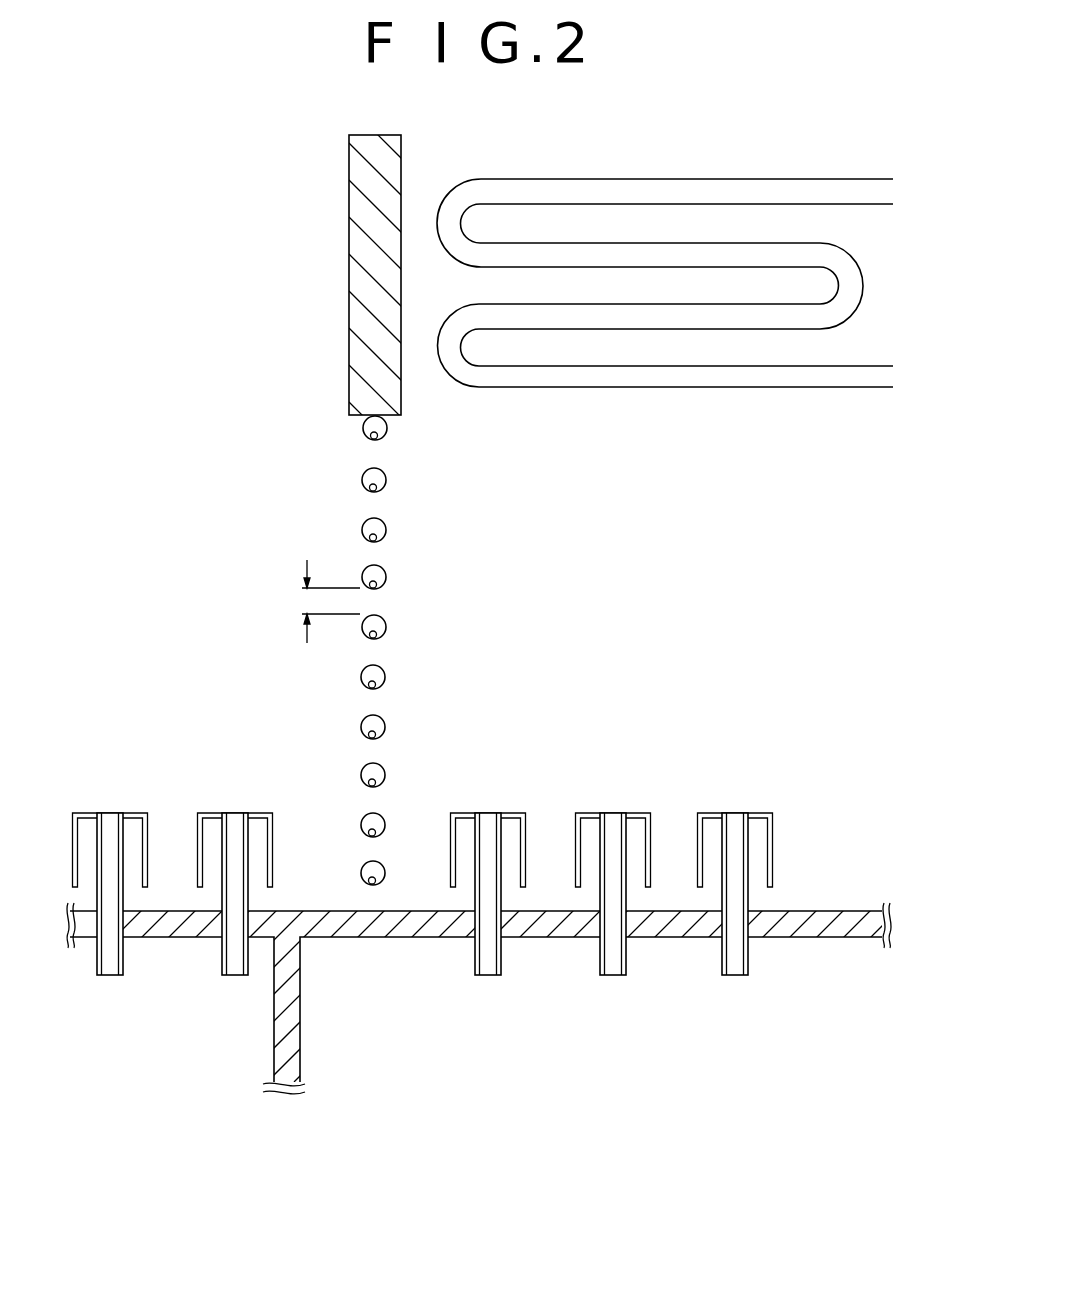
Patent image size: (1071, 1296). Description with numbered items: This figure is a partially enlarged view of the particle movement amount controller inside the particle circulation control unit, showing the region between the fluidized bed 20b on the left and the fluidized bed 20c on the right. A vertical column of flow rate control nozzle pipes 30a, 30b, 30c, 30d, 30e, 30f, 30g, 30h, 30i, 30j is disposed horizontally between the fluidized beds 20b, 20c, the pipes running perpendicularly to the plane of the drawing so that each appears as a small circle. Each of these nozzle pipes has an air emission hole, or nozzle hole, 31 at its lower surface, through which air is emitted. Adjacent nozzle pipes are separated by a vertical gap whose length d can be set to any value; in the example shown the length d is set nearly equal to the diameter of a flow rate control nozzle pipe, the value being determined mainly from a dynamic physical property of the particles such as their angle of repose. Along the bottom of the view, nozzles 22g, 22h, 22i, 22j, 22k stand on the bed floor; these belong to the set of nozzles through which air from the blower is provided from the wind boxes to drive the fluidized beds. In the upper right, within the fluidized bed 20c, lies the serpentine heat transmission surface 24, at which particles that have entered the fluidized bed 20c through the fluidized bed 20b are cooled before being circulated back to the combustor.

The heat transmission surface 24 is at (657, 184).
The air emission hole 31 is at (365, 440).
The flow rate control nozzle pipe 30a is at (387, 427).
The flow rate control nozzle pipe 30b is at (386, 479).
The flow rate control nozzle pipe 30c is at (386, 529).
The flow rate control nozzle pipe 30d is at (386, 576).
The flow rate control nozzle pipe 30e is at (386, 626).
The flow rate control nozzle pipe 30f is at (385, 676).
The flow rate control nozzle pipe 30g is at (385, 724).
The flow rate control nozzle pipe 30h is at (382, 767).
The flow rate control nozzle pipe 30i is at (364, 817).
The flow rate control nozzle pipe 30j is at (364, 866).
The nozzle 22g is at (93, 813).
The nozzle 22h is at (217, 813).
The nozzle 22i is at (512, 812).
The nozzle 22j is at (637, 812).
The nozzle 22k is at (760, 812).
The fluidized bed 20b is at (170, 535).
The fluidized bed 20c is at (717, 532).
The length of vertical gap d is at (308, 598).